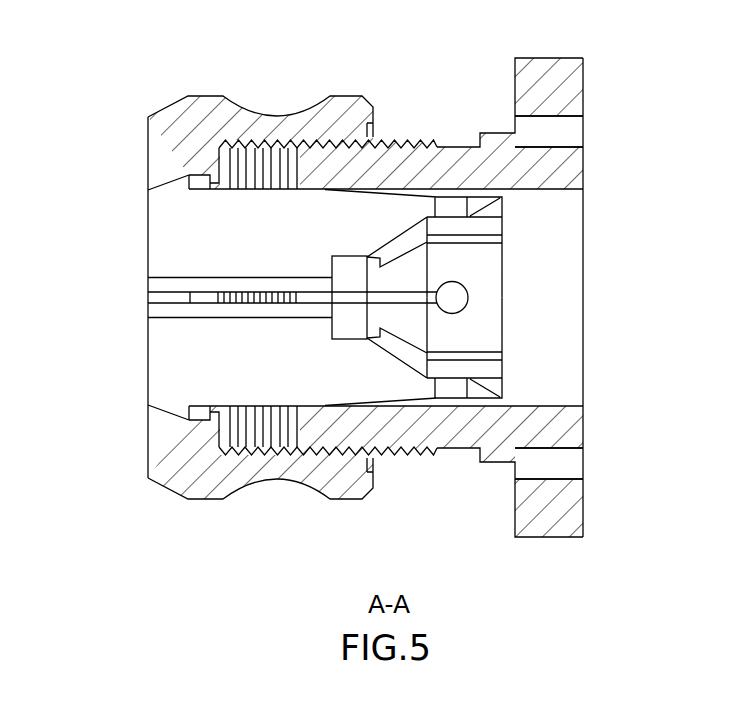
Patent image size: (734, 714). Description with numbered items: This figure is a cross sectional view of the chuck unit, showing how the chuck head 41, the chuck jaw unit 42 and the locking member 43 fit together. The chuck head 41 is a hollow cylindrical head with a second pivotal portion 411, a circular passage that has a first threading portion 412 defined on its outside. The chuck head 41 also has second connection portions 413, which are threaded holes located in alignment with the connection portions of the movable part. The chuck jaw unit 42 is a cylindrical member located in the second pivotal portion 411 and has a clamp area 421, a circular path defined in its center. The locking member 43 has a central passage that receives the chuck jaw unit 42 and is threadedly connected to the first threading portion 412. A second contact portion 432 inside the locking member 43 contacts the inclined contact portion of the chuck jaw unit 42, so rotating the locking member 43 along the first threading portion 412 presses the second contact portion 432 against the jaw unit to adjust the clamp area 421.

The chuck head 41 is at (367, 303).
The second pivotal portion 411 is at (575, 319).
The first threading portion 412 is at (406, 137).
The second connection portions 413 is at (572, 137).
The chuck jaw unit 42 is at (167, 355).
The clamp area 421 is at (158, 288).
The locking member 43 is at (163, 110).
The second contact portion 432 is at (148, 173).